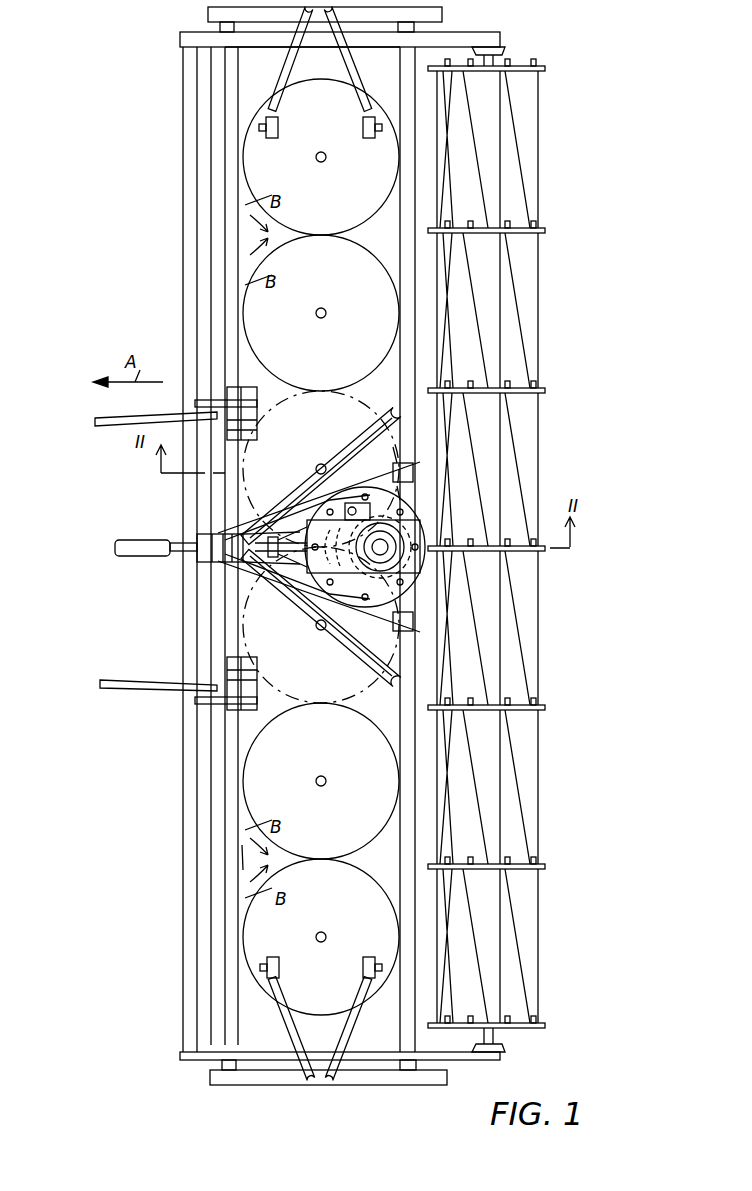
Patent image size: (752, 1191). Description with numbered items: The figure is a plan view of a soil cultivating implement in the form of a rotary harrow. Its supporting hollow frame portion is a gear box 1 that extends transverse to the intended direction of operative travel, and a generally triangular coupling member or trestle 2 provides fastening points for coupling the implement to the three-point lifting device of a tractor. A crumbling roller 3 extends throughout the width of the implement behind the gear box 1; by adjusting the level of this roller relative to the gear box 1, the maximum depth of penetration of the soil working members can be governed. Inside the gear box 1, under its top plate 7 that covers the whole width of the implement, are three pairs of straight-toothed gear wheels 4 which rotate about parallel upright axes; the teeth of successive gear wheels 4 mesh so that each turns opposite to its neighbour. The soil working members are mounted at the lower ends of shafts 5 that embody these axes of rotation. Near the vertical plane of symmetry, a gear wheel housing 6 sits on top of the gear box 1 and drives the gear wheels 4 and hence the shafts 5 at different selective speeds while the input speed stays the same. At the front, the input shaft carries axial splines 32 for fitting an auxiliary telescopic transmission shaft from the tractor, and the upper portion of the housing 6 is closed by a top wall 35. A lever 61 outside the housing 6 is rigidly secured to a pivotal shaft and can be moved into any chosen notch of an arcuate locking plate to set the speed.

The gear box 1 is at (430, 55).
The coupling member or trestle 2 is at (207, 490).
The crumbling roller 3 is at (555, 361).
The gear wheels 4 is at (375, 238).
The shafts 5 is at (326, 310).
The gear wheel housing 6 is at (427, 509).
The top plate 7 is at (250, 857).
The axial splines 32 is at (243, 563).
The wall 35 is at (372, 565).
The lever 61 is at (355, 488).